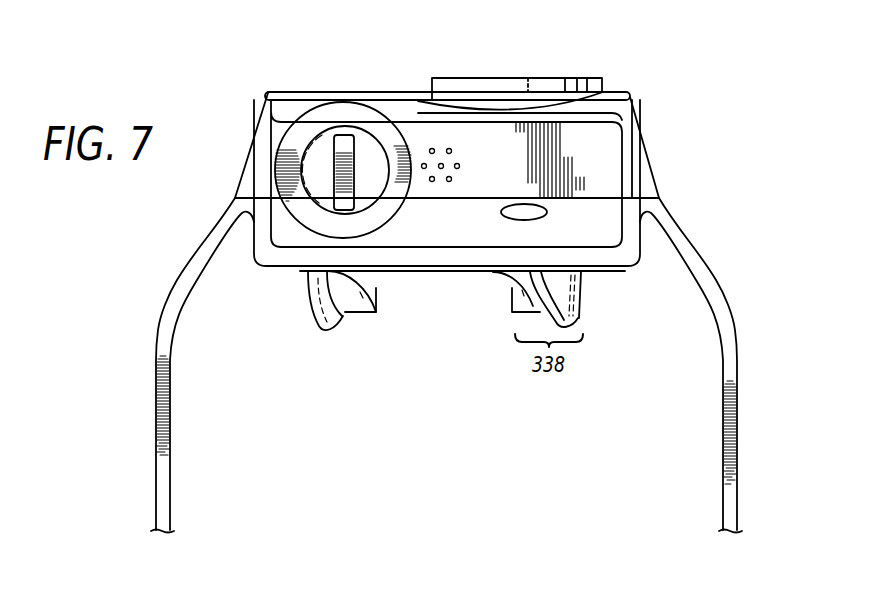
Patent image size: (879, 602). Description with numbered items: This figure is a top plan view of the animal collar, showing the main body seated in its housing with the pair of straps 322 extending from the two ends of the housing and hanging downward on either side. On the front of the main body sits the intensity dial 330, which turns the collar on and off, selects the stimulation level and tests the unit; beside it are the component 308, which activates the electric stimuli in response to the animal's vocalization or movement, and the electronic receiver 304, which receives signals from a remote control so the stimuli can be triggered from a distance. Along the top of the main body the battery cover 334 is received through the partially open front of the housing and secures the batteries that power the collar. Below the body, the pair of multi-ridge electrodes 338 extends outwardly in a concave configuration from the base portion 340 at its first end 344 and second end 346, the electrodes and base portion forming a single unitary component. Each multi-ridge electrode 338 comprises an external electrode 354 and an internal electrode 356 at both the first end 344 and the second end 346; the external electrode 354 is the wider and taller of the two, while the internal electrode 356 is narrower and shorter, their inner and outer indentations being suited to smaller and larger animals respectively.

The electronic receiver 304 is at (503, 153).
The component 308 is at (422, 157).
The straps 322 is at (157, 360).
The intensity dial 330 is at (323, 157).
The battery cover 334 is at (587, 80).
The multi-ridge electrodes 338 is at (291, 339).
The base portion 340 is at (457, 273).
The first end 344 is at (317, 283).
The second end 346 is at (563, 285).
The external electrode 354 is at (320, 313).
The internal electrode 356 is at (522, 307).